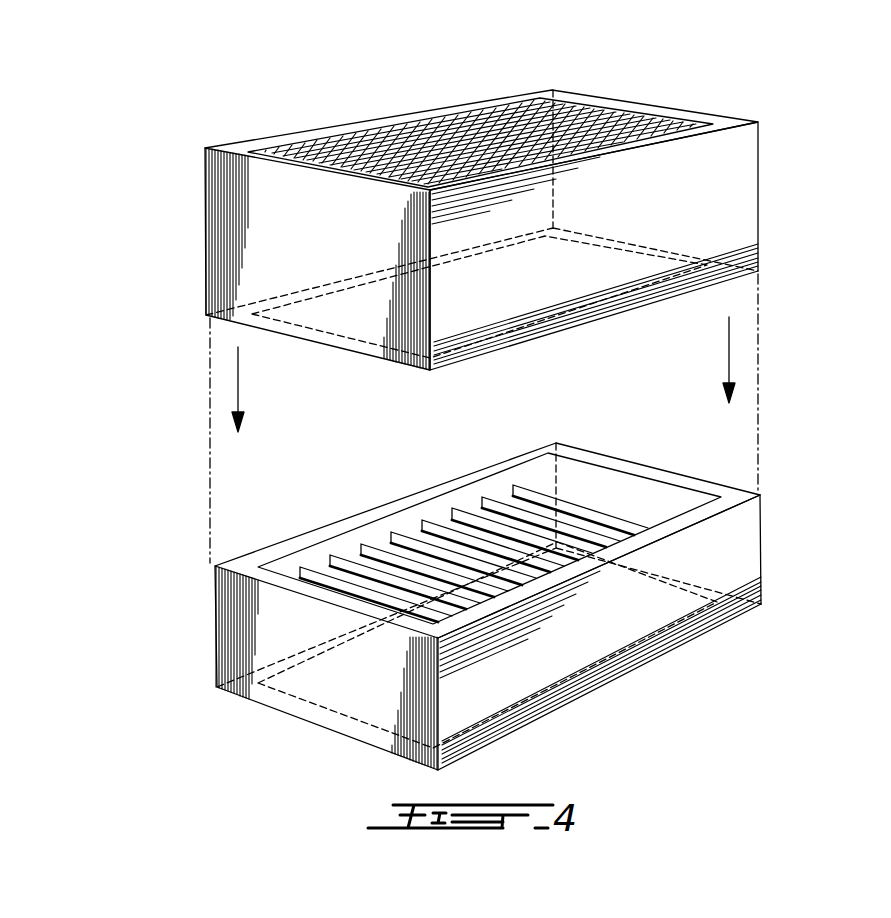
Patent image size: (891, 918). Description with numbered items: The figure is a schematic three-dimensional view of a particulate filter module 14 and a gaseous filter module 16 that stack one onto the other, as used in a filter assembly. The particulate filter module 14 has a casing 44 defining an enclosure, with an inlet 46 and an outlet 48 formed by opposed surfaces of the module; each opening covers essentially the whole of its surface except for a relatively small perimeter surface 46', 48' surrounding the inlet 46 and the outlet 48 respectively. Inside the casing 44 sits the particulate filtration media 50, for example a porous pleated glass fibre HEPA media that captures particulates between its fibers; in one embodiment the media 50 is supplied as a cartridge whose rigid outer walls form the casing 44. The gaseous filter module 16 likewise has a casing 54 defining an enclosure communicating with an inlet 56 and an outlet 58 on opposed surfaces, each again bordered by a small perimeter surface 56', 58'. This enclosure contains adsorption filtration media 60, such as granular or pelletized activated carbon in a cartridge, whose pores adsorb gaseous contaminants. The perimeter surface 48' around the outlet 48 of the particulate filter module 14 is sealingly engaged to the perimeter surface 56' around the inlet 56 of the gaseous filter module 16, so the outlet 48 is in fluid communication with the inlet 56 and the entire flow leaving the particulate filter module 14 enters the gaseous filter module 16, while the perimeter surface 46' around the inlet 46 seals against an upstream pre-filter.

The particulate filter module 14 is at (775, 595).
The gaseous filter module 16 is at (198, 213).
The casing 44 is at (733, 548).
The inlet 46 is at (599, 639).
The perimeter surface 46' is at (601, 670).
The outlet 48 is at (332, 535).
The perimeter surface 48' is at (540, 533).
The particulate filtration media 50 is at (542, 505).
The casing 54 is at (718, 183).
The inlet 56 is at (479, 327).
The perimeter surface 56' is at (642, 304).
The outlet 58 is at (481, 117).
The perimeter surface 58' is at (515, 119).
The adsorption filtration media 60 is at (514, 141).